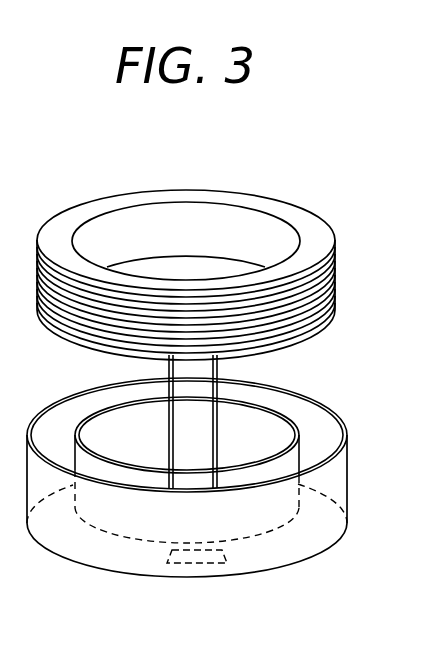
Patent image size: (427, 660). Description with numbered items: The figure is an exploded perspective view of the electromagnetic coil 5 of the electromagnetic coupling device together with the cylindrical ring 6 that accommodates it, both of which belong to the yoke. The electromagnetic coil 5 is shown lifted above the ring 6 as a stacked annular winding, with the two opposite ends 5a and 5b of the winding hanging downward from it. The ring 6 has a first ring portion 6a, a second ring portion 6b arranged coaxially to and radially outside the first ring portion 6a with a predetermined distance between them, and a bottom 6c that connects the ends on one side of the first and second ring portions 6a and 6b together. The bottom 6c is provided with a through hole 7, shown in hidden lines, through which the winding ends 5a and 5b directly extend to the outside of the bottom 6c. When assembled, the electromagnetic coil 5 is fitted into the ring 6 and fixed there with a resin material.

The electromagnetic coil 5 is at (338, 244).
The end of the winding 5a is at (219, 372).
The end of the winding 5b is at (174, 450).
The cylindrical ring 6 is at (349, 414).
The first ring portion 6a is at (281, 412).
The second ring portion 6b is at (329, 400).
The bottom 6c is at (347, 527).
The through hole 7 is at (180, 565).